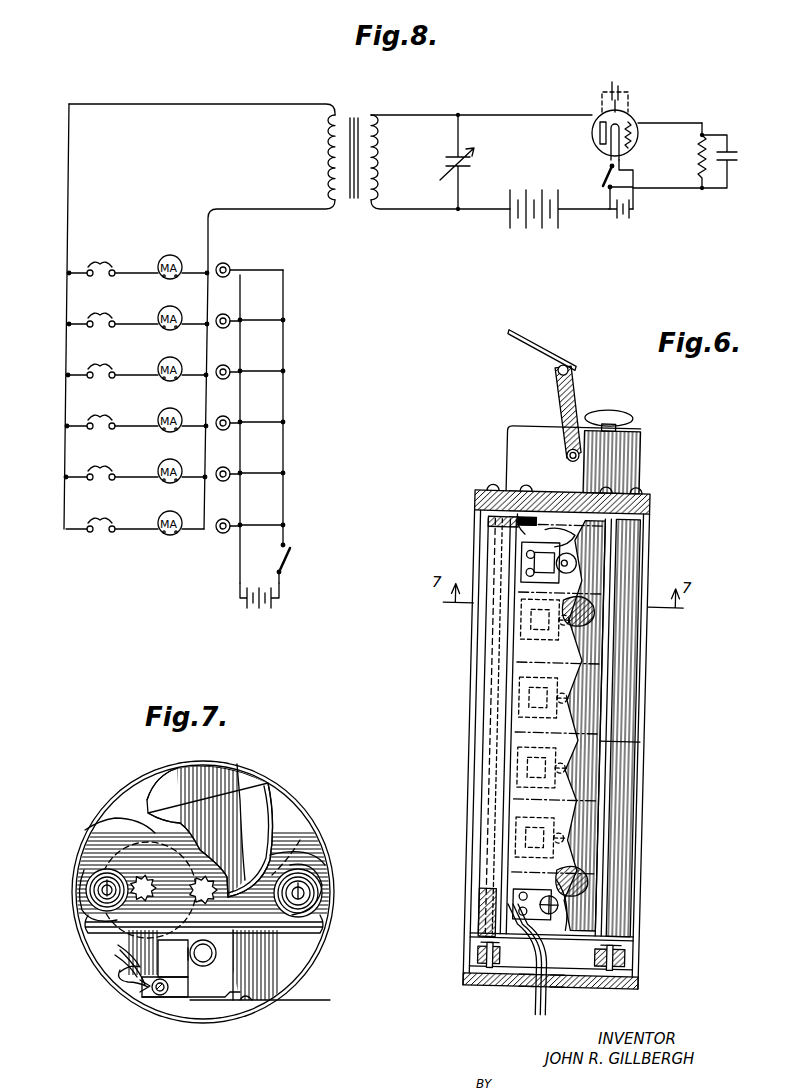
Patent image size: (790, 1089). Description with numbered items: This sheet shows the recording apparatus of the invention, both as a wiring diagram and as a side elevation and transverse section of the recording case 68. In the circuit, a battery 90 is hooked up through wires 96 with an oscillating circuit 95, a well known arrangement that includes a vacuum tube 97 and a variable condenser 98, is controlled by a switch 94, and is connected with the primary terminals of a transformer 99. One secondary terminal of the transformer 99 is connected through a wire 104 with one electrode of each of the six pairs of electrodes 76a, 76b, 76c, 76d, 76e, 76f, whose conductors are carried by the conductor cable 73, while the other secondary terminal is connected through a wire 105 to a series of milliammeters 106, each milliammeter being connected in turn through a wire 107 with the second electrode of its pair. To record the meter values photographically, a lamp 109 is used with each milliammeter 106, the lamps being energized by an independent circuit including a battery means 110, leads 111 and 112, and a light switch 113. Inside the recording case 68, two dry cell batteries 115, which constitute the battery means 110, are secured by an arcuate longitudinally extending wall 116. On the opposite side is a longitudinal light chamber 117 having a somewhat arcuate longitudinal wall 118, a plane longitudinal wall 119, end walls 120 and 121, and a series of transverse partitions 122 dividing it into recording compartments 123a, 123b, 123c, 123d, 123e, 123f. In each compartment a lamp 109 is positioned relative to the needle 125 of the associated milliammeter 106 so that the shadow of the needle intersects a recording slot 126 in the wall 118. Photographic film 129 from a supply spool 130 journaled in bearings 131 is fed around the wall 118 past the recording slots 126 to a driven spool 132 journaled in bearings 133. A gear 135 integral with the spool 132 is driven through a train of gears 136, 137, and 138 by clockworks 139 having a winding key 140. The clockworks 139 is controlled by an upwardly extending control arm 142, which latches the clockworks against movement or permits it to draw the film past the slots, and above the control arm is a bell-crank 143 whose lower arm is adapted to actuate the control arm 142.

In FIG. 7, the recording case 68 is at (69, 873).
In FIG. 6, the recording case 68 is at (466, 674).
In FIG. 6, the conductor cable 73 is at (538, 1010).
In FIG. 8, the pair of electrodes 76a is at (99, 270).
In FIG. 8, the pair of electrodes 76b is at (99, 321).
In FIG. 8, the pair of electrodes 76c is at (99, 372).
In FIG. 8, the pair of electrodes 76d is at (99, 423).
In FIG. 8, the pair of electrodes 76e is at (99, 474).
In FIG. 8, the pair of electrodes 76f is at (99, 526).
In FIG. 8, the battery 90 is at (532, 232).
In FIG. 8, the switch 94 is at (597, 180).
In FIG. 8, the oscillating circuit 95 is at (552, 102).
In FIG. 8, the wires 96 is at (488, 212).
In FIG. 8, the vacuum tube 97 is at (642, 128).
In FIG. 8, the variable condenser 98 is at (448, 151).
In FIG. 8, the transformer 99 is at (356, 108).
In FIG. 8, the wire 104 is at (179, 104).
In FIG. 8, the wire 105 is at (312, 210).
In FIG. 8, the milliammeter 106 is at (181, 266).
In FIG. 7, the milliammeter 106 is at (176, 968).
In FIG. 6, the milliammeter 106 is at (527, 565).
In FIG. 8, the wire 107 is at (142, 271).
In FIG. 8, the lamp 109 is at (228, 266).
In FIG. 7, the lamp 109 is at (215, 962).
In FIG. 6, the lamp 109 is at (525, 550).
In FIG. 8, the battery means 110 is at (277, 605).
In FIG. 8, the lead 111 is at (287, 444).
In FIG. 8, the lead 112 is at (260, 429).
In FIG. 8, the light switch 113 is at (292, 560).
In FIG. 7, the dry cell battery 115 is at (217, 792).
In FIG. 6, the dry cell battery 115 is at (615, 672).
In FIG. 7, the arcuate longitudinally extending wall 116 is at (275, 824).
In FIG. 6, the arcuate longitudinally extending wall 116 is at (497, 778).
In FIG. 7, the light chamber 117 is at (290, 962).
In FIG. 7, the arcuate longitudinal wall 118 is at (265, 1012).
In FIG. 7, the plane longitudinal wall 119 is at (323, 930).
In FIG. 7, the end wall 120 is at (108, 953).
In FIG. 6, the end wall 120 is at (540, 535).
In FIG. 6, the end wall 121 is at (575, 910).
In FIG. 6, the transverse partition 122 is at (565, 585).
In FIG. 7, the recording compartment 123a is at (120, 960).
In FIG. 6, the recording compartment 123a is at (590, 530).
In FIG. 6, the recording compartment 123b is at (560, 600).
In FIG. 6, the recording compartment 123c is at (595, 663).
In FIG. 6, the recording compartment 123d is at (595, 733).
In FIG. 6, the recording compartment 123e is at (595, 832).
In FIG. 6, the recording compartment 123f is at (595, 873).
In FIG. 7, the needle 125 is at (225, 1000).
In FIG. 6, the needle 125 is at (574, 560).
In FIG. 7, the recording slot 126 is at (205, 1005).
In FIG. 6, the recording slot 126 is at (600, 545).
In FIG. 7, the photographic film 129 is at (86, 905).
In FIG. 6, the photographic film 129 is at (630, 740).
In FIG. 7, the supply spool 130 is at (320, 862).
In FIG. 6, the supply spool 130 is at (620, 937).
In FIG. 6, the bearing 131 is at (640, 497).
In FIG. 7, the driven spool 132 is at (97, 843).
In FIG. 6, the driven spool 132 is at (488, 930).
In FIG. 6, the bearing 133 is at (480, 490).
In FIG. 7, the gear 135 is at (108, 925).
In FIG. 6, the gear 135 is at (490, 518).
In FIG. 7, the gear 136 is at (143, 882).
In FIG. 6, the gear 136 is at (520, 535).
In FIG. 7, the gear 137 is at (132, 785).
In FIG. 7, the gear 138 is at (303, 838).
In FIG. 6, the clockworks 139 is at (625, 436).
In FIG. 6, the winding key 140 is at (600, 412).
In FIG. 6, the control arm 142 is at (553, 395).
In FIG. 6, the bell-crank 143 is at (533, 348).